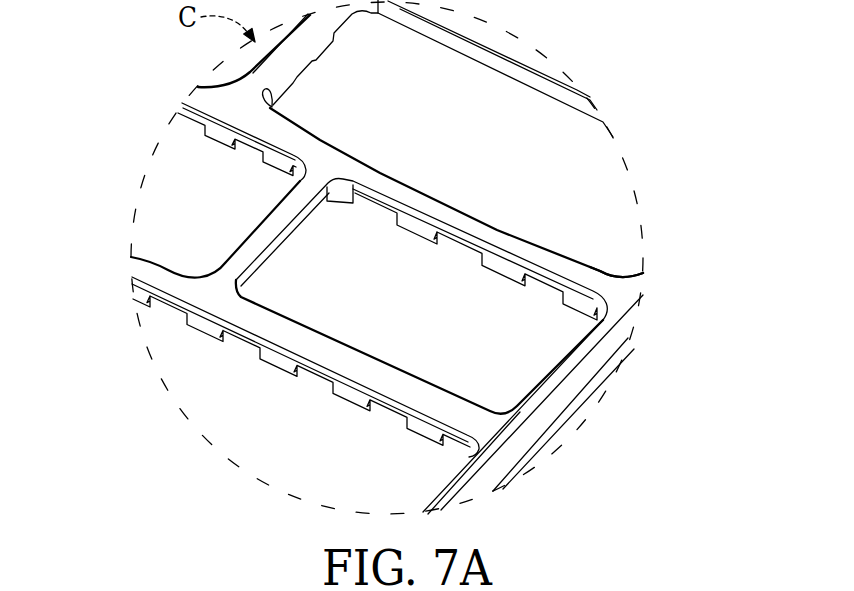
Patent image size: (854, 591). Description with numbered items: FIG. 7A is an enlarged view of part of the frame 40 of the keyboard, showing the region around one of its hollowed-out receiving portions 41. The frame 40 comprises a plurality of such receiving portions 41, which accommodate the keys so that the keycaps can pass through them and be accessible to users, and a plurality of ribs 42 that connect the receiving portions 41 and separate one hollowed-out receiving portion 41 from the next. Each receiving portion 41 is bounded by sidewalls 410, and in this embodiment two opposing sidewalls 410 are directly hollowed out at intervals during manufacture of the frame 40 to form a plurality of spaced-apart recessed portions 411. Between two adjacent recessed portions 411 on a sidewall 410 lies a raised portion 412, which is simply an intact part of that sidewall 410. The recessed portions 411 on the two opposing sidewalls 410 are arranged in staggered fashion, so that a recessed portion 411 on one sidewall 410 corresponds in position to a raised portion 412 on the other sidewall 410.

The frame 40 is at (202, 93).
The sidewall 410 is at (181, 122).
The receiving portion 41 is at (597, 203).
The rib 42 is at (642, 280).
The recessed portion 411 is at (643, 297).
The raised portion 412 is at (500, 262).